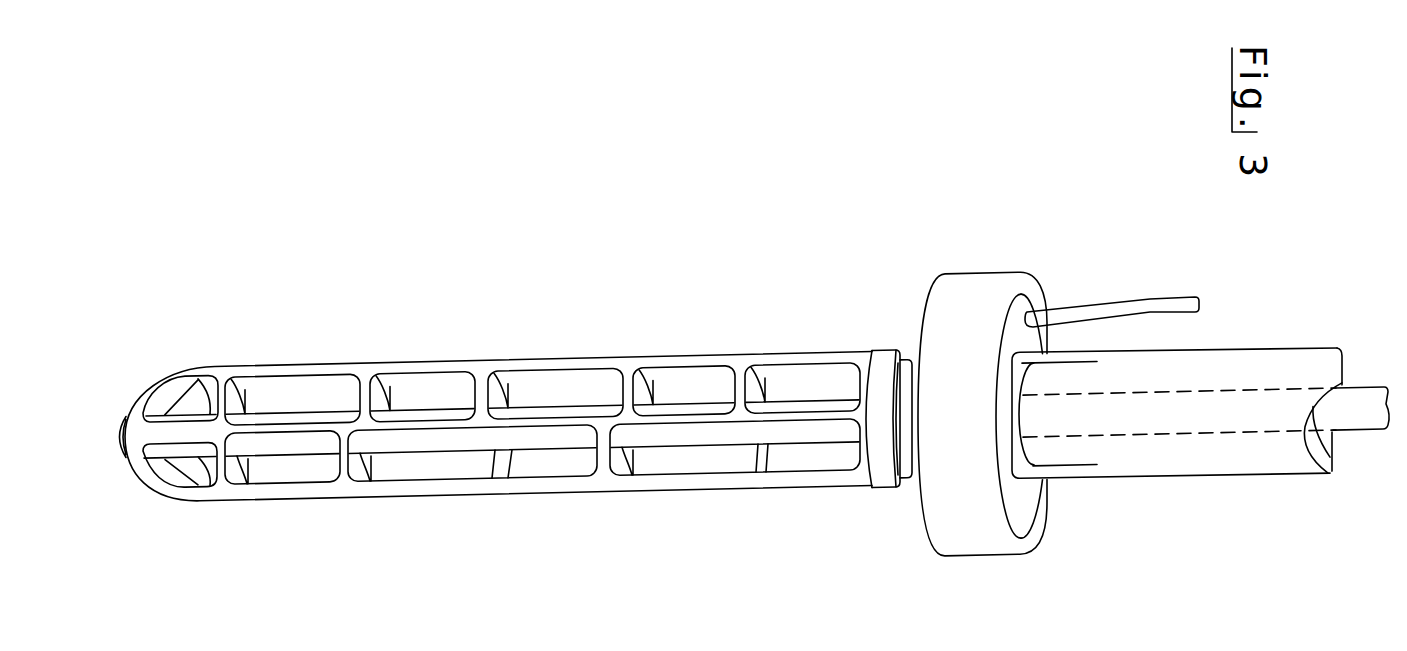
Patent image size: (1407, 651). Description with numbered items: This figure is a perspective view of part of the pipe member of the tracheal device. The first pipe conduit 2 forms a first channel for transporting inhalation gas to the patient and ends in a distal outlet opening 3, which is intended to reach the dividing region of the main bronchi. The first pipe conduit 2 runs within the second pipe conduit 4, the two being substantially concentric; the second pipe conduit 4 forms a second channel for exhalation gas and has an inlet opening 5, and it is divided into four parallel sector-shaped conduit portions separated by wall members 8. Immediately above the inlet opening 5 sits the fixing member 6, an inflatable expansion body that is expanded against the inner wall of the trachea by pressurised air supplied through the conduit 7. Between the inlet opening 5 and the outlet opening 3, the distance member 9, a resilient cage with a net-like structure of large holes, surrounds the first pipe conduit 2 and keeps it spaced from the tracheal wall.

The first pipe conduit 2 is at (1363, 417).
The distal outlet opening 3 is at (117, 441).
The second pipe conduit 4 is at (1247, 467).
The inlet opening 5 is at (864, 451).
The fixing member 6 is at (998, 546).
The conduit 7 is at (1124, 302).
The wall members 8 is at (1302, 450).
The distance member 9 is at (556, 486).